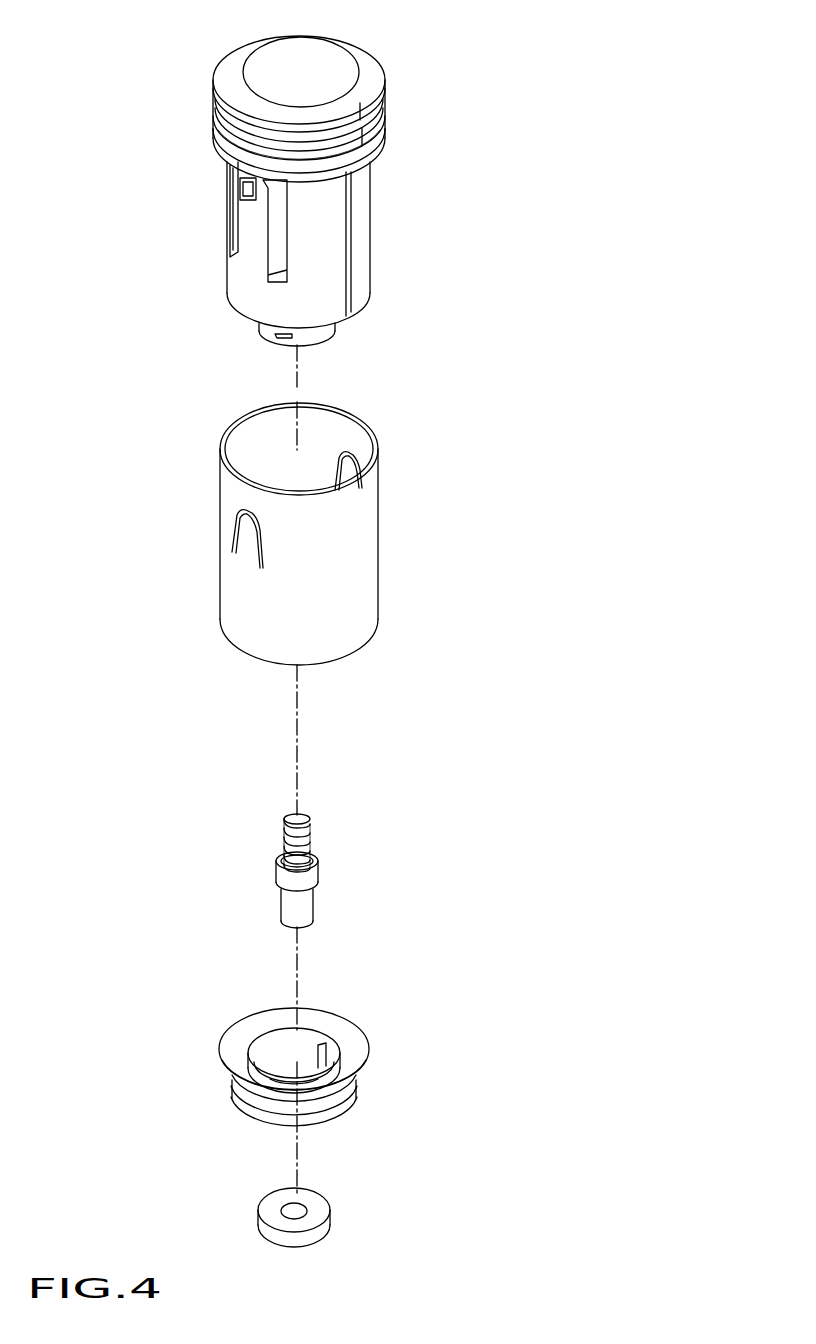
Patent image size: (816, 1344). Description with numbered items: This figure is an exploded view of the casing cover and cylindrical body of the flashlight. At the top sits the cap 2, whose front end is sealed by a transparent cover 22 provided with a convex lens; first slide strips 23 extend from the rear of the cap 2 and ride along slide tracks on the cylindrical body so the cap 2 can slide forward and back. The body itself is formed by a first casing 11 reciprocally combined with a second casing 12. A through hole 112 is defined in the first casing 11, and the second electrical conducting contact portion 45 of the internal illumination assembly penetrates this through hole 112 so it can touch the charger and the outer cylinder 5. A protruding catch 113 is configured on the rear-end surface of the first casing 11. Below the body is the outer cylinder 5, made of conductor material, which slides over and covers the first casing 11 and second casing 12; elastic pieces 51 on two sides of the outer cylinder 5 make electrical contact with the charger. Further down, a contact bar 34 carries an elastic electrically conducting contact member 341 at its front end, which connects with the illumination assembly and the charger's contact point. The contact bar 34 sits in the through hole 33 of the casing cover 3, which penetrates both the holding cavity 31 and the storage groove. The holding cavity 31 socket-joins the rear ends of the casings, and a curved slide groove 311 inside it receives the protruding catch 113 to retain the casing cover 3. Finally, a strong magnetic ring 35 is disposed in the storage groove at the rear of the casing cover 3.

The cap 2 is at (376, 72).
The transparent cover 22 is at (316, 65).
The first casing 11 is at (250, 280).
The second casing 12 is at (362, 265).
The first slide strips 23 is at (232, 230).
The through hole 112 is at (248, 190).
The second electrical conducting contact portion 45 is at (242, 176).
The protruding catch 113 is at (280, 337).
The outer cylinder 5 is at (358, 560).
The elastic pieces 51 is at (245, 530).
The elastic electrically conducting contact member 341 is at (310, 825).
The contact bar 34 is at (305, 908).
The casing cover 3 is at (250, 1100).
The holding cavity 31 is at (310, 1045).
The through hole 33 is at (293, 1075).
The curved slide groove 311 is at (333, 1055).
The strong magnetic ring 35 is at (318, 1205).